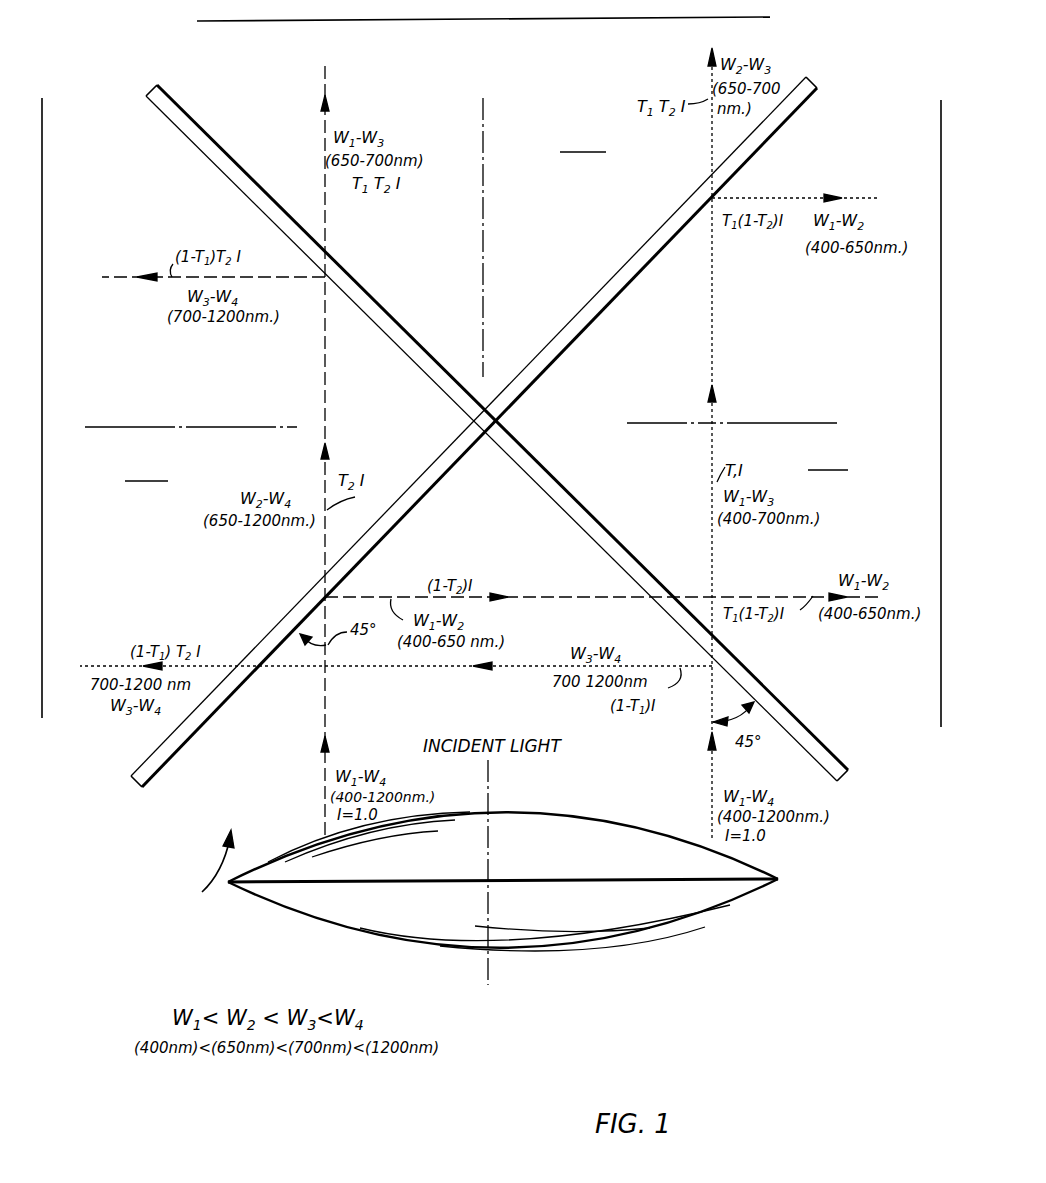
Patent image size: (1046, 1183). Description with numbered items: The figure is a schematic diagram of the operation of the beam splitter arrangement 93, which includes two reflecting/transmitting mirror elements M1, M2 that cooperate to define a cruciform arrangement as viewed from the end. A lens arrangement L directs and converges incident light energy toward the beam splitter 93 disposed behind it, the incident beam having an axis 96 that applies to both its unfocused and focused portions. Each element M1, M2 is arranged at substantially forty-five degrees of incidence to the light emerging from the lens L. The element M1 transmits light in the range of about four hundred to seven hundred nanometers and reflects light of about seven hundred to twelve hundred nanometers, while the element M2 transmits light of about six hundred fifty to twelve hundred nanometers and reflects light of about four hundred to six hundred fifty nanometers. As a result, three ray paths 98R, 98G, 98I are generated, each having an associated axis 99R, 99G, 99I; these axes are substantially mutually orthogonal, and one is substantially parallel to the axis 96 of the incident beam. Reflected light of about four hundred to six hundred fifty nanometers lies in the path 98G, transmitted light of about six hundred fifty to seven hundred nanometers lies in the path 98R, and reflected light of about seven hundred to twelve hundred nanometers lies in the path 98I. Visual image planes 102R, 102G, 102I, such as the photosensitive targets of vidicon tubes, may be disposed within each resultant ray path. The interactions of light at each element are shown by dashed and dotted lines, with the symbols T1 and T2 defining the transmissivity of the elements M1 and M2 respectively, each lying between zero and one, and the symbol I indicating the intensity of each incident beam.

The visual image plane 102R is at (305, 21).
The visual image plane 102I is at (42, 203).
The visual image plane 102G is at (941, 682).
The ray path 98R is at (583, 141).
The ray path 98I is at (146, 470).
The ray path 98G is at (828, 459).
The axis 99R is at (483, 262).
The axis 99I is at (152, 427).
The axis 99G is at (795, 423).
The axis of the incident beam 96 is at (490, 790).
The beam splitter arrangement 93 is at (199, 867).
The lens arrangement L is at (763, 897).
The reflecting/transmitting mirror element M1 is at (778, 708).
The reflecting/transmitting mirror element M2 is at (804, 99).
The transmissivity of element M1 T1 is at (793, 740).
The transmissivity of element M2 T2 is at (781, 131).